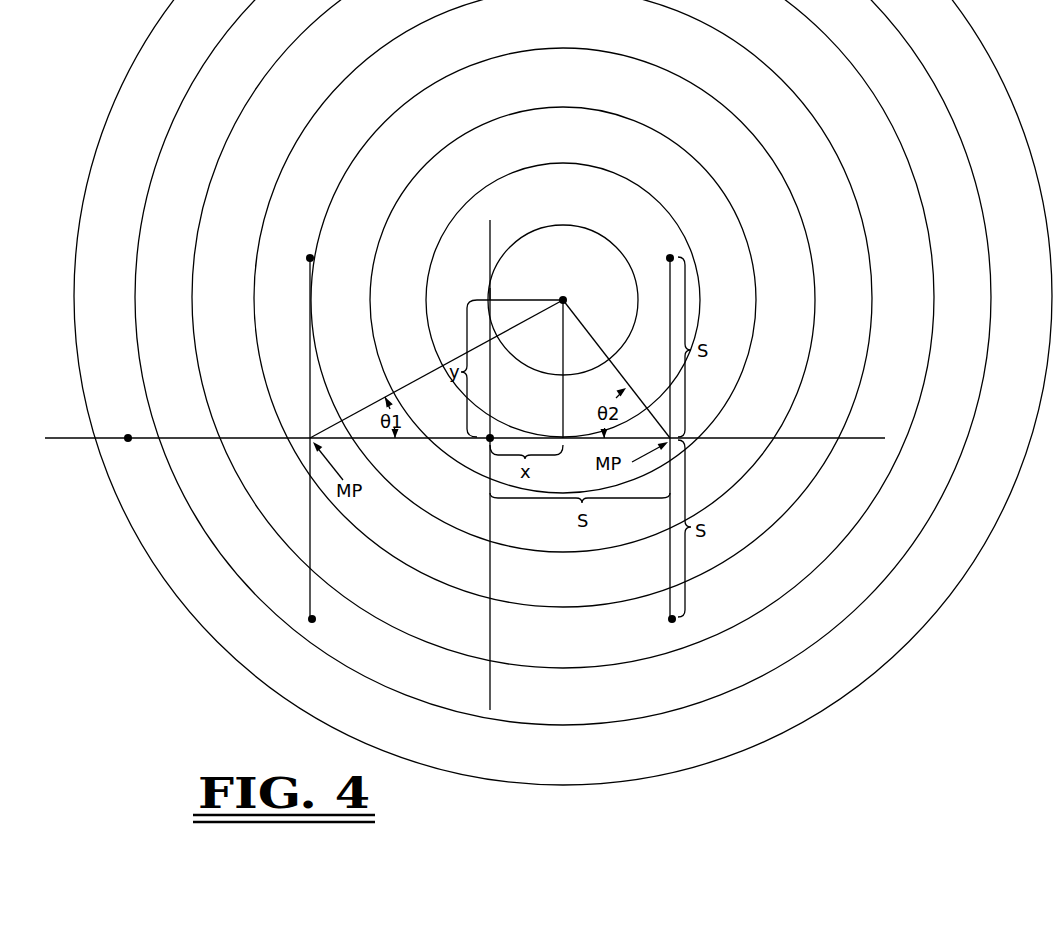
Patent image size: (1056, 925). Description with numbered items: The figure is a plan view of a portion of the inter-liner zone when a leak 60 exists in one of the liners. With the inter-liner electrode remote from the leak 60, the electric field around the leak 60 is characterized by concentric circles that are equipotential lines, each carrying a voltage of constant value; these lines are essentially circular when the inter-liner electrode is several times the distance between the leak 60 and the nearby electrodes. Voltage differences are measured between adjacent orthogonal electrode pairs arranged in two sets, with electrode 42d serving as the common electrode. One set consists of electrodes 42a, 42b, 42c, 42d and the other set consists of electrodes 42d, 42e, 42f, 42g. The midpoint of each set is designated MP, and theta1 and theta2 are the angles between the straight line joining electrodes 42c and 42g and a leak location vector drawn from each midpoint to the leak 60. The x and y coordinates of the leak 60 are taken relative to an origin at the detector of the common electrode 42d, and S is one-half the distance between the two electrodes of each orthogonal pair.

The electrode 42a is at (310, 255).
The electrode 42b is at (314, 621).
The electrode 42c is at (128, 435).
The common electrode 42d is at (488, 440).
The electrode 42e is at (668, 256).
The electrode 42f is at (669, 621).
The electrode 42g is at (852, 443).
The leak 60 is at (564, 293).